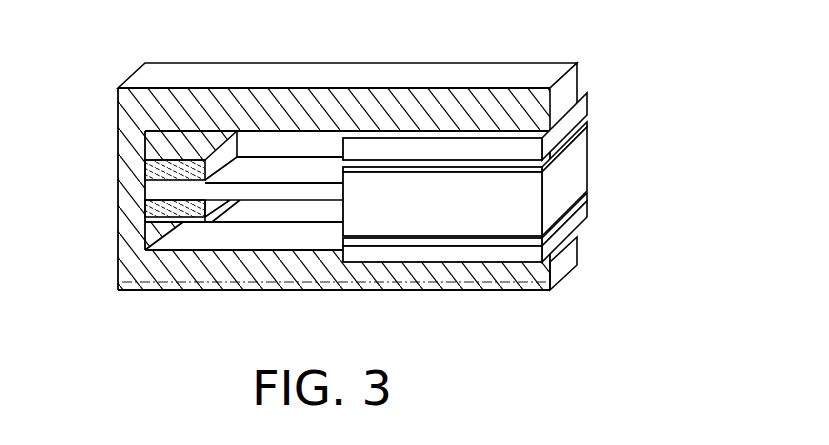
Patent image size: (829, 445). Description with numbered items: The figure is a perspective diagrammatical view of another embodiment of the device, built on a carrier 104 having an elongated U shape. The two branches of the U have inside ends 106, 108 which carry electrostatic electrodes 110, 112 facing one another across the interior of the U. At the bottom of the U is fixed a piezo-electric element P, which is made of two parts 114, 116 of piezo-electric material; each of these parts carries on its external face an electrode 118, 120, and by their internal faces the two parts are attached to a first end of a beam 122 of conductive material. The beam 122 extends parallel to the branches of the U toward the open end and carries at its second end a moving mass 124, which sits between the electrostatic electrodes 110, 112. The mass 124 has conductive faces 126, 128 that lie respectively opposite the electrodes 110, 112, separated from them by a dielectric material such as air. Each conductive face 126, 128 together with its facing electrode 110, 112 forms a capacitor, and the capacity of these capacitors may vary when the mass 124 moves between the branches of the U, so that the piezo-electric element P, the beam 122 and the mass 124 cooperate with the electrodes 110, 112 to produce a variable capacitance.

The carrier 104 is at (197, 278).
The inside end of branch 106 is at (438, 133).
The inside end of branch 108 is at (317, 238).
The electrostatic electrode 110 is at (580, 112).
The electrostatic electrode 112 is at (580, 214).
The part made of piezo-electric material 114 is at (148, 168).
The part made of piezo-electric material 116 is at (165, 218).
The electrode 118 is at (122, 236).
The electrode 120 is at (165, 150).
The beam 122 is at (268, 170).
The moving mass 124 is at (578, 162).
The conductive face 126 is at (584, 228).
The conductive face 128 is at (580, 126).
The piezo-electric element P is at (192, 223).